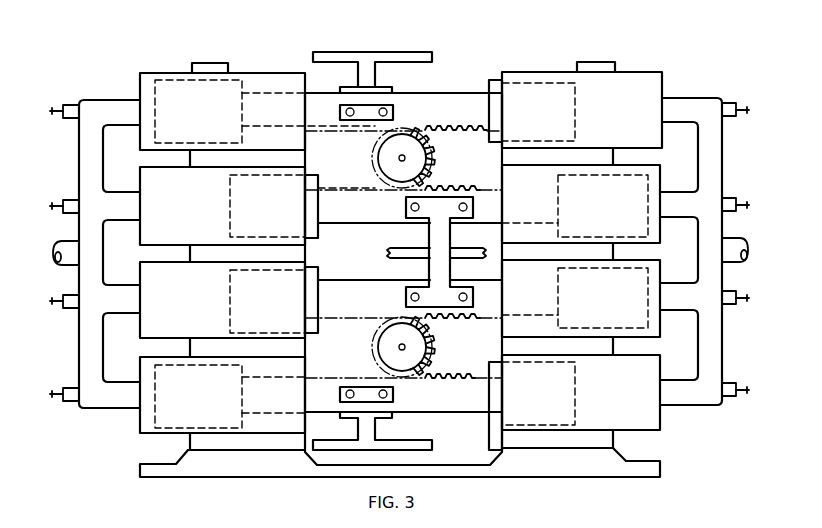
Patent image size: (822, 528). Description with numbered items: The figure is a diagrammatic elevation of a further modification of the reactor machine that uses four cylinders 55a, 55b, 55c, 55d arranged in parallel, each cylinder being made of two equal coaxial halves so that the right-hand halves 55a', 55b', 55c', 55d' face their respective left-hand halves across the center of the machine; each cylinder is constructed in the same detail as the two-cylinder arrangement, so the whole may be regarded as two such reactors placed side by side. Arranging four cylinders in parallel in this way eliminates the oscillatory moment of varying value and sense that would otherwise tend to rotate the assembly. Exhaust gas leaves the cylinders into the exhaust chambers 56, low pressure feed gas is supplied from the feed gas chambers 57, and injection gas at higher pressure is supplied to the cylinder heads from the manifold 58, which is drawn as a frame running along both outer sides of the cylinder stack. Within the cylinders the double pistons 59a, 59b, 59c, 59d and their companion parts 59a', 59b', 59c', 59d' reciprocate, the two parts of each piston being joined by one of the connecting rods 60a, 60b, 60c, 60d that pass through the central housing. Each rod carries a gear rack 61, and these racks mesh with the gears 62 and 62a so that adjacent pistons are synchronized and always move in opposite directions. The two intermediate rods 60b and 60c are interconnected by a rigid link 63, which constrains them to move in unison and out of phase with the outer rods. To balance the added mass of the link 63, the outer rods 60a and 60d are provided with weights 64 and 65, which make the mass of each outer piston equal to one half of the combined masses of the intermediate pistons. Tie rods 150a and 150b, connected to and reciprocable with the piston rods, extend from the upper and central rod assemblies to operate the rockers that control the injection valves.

The cylinder 55a is at (200, 107).
The cylinder 55b is at (204, 203).
The cylinder 55c is at (204, 298).
The cylinder 55d is at (204, 393).
The cylinder 55a' is at (598, 97).
The cylinder 55b' is at (602, 204).
The cylinder 55c' is at (602, 301).
The cylinder 55d' is at (602, 398).
The exhaust chamber 56 is at (194, 62).
The feed gas chamber 57 is at (191, 157).
The manifold for injection gas 58 is at (79, 170).
The double piston 59a is at (265, 91).
The double piston 59b is at (302, 193).
The double piston 59c is at (292, 290).
The double piston 59d is at (198, 405).
The double piston 59a' is at (522, 94).
The double piston 59b' is at (602, 193).
The double piston 59c' is at (602, 293).
The double piston 59d' is at (512, 410).
The connecting rod 60a is at (463, 97).
The connecting rod 60b is at (328, 224).
The connecting rod 60c is at (363, 292).
The connecting rod 60d is at (420, 413).
The gear rack 61 is at (455, 132).
The gear 62 is at (432, 163).
The gear 62a is at (432, 352).
The rigid link 63 is at (430, 233).
The weight 64 is at (339, 105).
The weight 65 is at (356, 387).
The tie rod 150a is at (321, 52).
The tie rod 150b is at (466, 258).